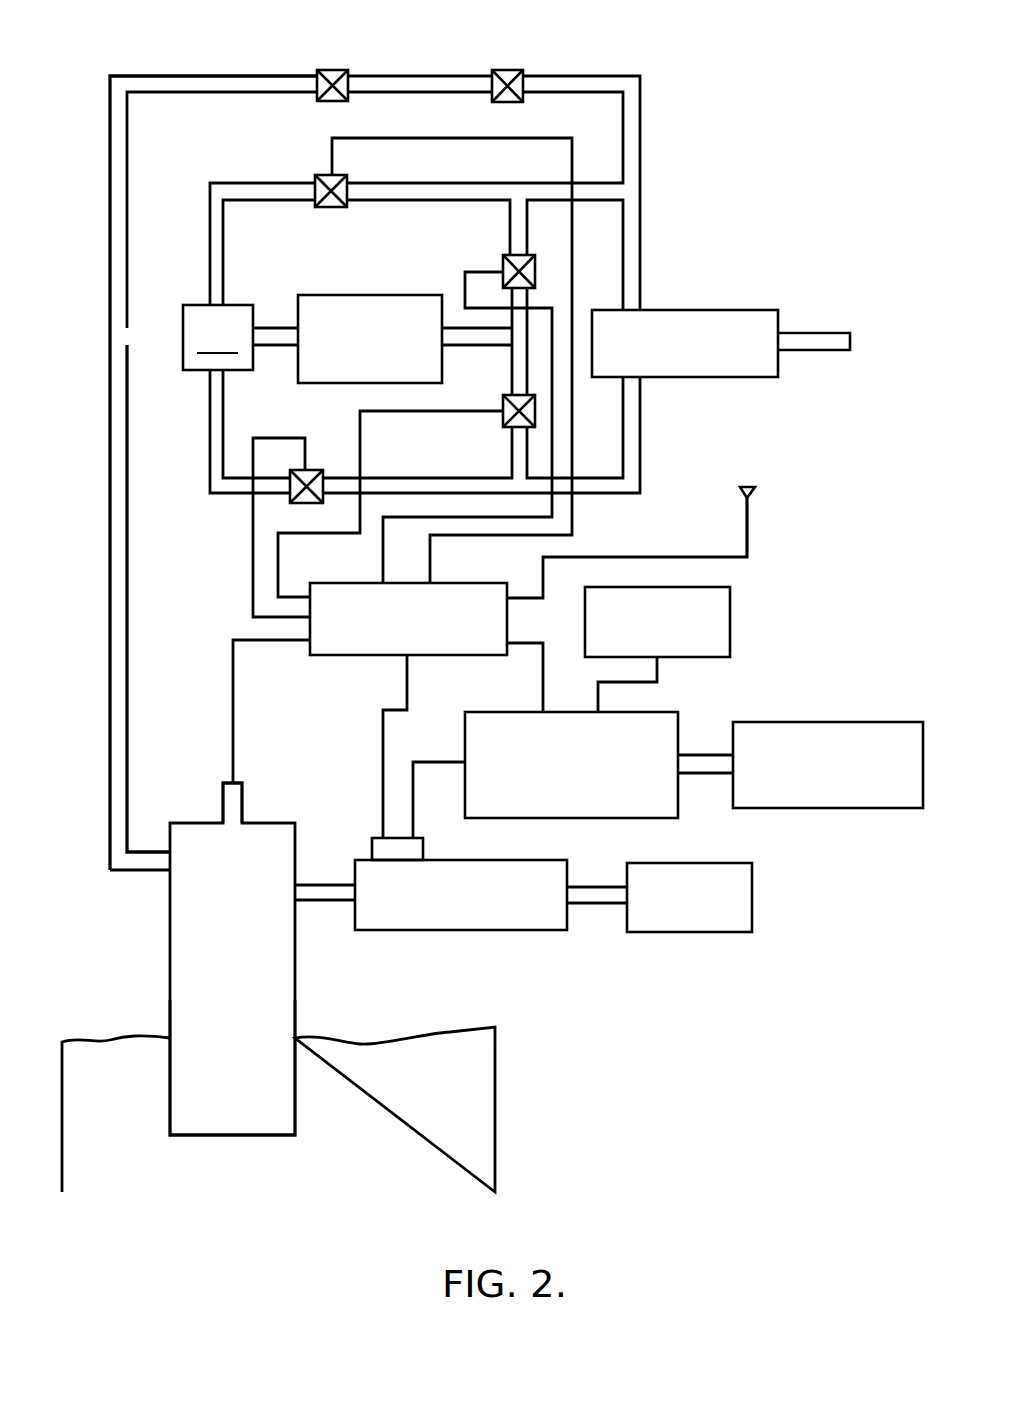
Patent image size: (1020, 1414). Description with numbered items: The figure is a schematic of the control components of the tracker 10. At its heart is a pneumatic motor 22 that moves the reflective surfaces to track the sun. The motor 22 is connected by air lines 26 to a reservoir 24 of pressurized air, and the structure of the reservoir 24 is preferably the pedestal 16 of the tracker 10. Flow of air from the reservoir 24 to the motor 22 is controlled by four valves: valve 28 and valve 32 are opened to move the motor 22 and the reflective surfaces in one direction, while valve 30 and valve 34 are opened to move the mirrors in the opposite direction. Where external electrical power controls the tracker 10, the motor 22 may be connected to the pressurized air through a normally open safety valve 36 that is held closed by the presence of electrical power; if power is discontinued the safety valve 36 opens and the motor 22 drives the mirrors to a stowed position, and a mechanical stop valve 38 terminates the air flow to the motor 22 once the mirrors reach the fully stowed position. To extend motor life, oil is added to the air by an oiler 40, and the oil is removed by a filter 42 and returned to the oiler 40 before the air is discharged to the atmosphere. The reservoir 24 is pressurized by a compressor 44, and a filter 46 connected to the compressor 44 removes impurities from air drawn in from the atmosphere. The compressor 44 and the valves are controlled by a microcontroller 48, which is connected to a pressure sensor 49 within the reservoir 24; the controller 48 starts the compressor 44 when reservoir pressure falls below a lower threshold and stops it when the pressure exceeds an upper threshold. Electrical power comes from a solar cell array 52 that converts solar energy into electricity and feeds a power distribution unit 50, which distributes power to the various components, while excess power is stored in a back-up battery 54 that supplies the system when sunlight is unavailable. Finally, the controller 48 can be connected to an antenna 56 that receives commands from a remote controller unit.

The tracker 10 is at (99, 127).
The pedestal 16 is at (170, 943).
The pneumatic motor 22 is at (743, 312).
The reservoir 24 is at (258, 998).
The air lines 26 is at (127, 612).
The valve 28 is at (316, 185).
The valve 30 is at (535, 272).
The valve 32 is at (535, 411).
The valve 34 is at (292, 490).
The safety valve 36 is at (332, 70).
The mechanical stop valve 38 is at (510, 70).
The oiler 40 is at (218, 337).
The filter 42 is at (372, 295).
The compressor 44 is at (510, 930).
The filter 46 is at (707, 927).
The microcontroller 48 is at (372, 655).
The pressure sensor 49 is at (235, 803).
The power distribution unit 50 is at (675, 712).
The solar cell array 52 is at (876, 808).
The back-up battery 54 is at (730, 628).
The antenna 56 is at (755, 490).